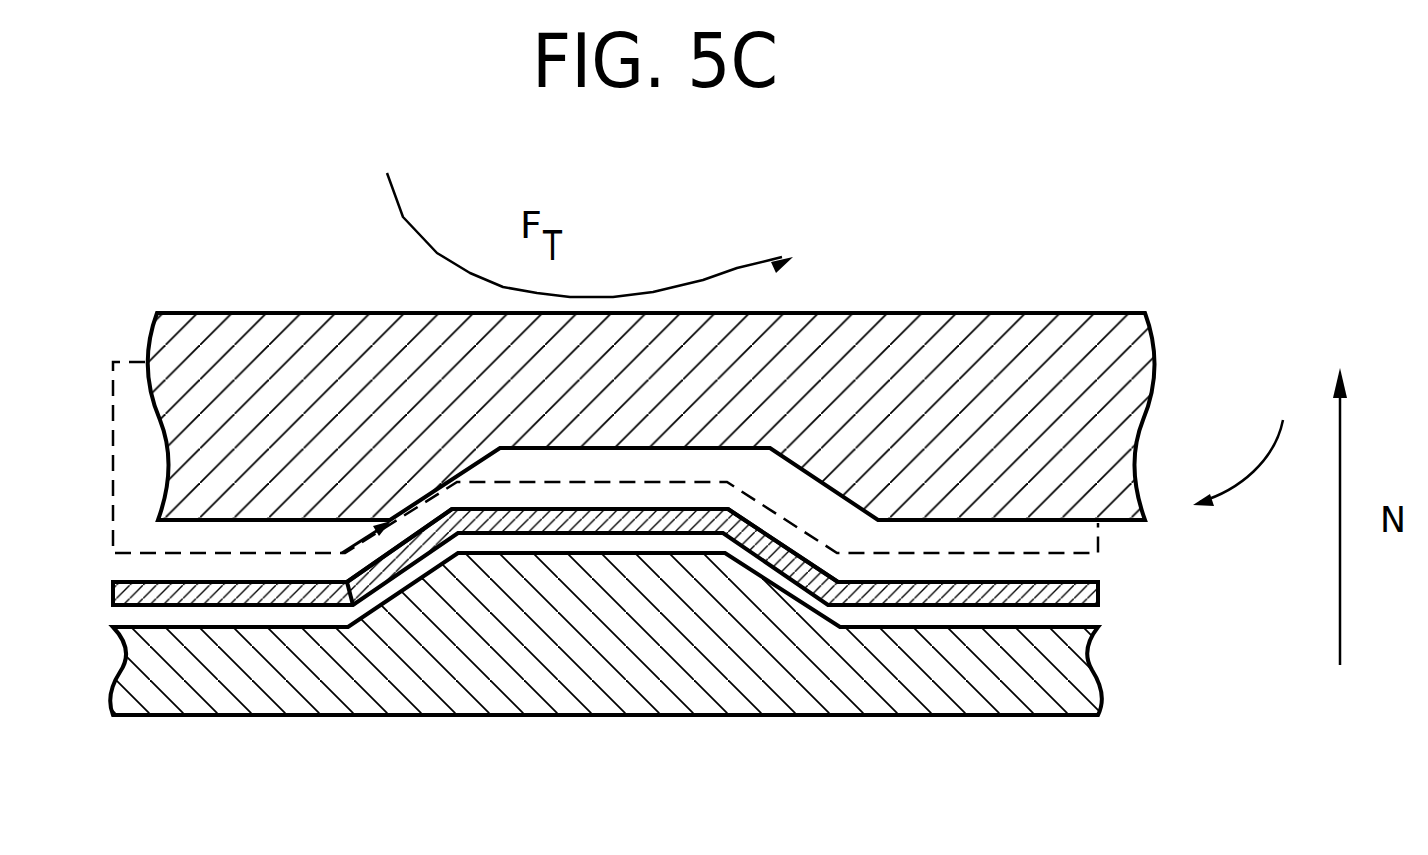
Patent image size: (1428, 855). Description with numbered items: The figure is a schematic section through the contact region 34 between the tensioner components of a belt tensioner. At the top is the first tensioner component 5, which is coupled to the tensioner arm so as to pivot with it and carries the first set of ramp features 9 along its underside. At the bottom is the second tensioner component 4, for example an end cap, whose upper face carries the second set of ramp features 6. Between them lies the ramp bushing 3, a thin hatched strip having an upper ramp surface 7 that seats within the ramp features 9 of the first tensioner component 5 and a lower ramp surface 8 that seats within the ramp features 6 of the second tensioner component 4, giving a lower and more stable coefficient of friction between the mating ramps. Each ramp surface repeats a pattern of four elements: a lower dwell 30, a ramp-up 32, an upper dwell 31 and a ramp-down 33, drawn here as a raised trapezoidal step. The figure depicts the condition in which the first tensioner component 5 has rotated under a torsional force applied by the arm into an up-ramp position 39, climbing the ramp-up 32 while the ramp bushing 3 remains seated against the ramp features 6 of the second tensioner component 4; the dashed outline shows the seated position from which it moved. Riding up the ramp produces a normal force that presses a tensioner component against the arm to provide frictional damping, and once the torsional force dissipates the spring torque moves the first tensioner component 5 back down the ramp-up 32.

The ramp bushing 3 is at (1100, 597).
The second tensioner component 4 is at (183, 705).
The first tensioner component 5 is at (210, 320).
The second set of ramp features 6 is at (920, 642).
The upper ramp surface 7 is at (1048, 581).
The lower ramp surface 8 is at (1082, 627).
The first set of ramp features 9 is at (1138, 538).
The lower dwell 30 is at (135, 580).
The upper dwell 31 is at (556, 512).
The ramp-up 32 is at (428, 524).
The ramp-down 33 is at (782, 535).
The contact region 34 is at (1244, 444).
The up-ramp position 39 is at (337, 590).